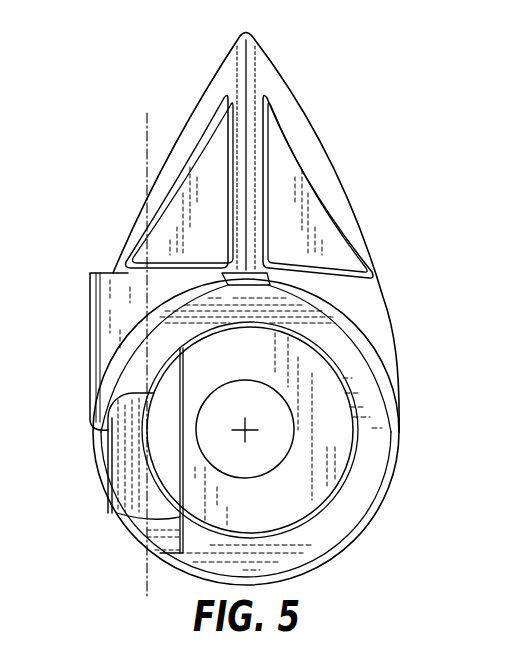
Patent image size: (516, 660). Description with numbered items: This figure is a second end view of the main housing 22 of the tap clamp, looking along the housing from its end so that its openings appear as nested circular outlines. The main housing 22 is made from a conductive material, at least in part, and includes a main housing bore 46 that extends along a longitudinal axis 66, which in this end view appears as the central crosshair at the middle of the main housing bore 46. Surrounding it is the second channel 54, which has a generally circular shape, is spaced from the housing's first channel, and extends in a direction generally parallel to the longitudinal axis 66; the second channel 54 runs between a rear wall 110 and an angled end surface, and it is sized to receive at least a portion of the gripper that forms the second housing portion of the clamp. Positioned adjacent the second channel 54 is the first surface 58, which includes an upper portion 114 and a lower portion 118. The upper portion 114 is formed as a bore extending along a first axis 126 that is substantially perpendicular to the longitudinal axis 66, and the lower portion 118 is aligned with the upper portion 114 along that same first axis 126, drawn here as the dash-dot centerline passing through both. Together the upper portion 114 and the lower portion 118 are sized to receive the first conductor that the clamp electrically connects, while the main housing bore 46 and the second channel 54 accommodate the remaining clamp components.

The main housing 22 is at (336, 105).
The first axis 126 is at (145, 150).
The first surface 58 is at (101, 252).
The upper portion 114 is at (120, 300).
The main housing bore 46 is at (230, 442).
The lower portion 118 is at (128, 480).
The longitudinal axis 66 is at (248, 428).
The second channel 54 is at (302, 470).
The rear wall 110 is at (330, 522).